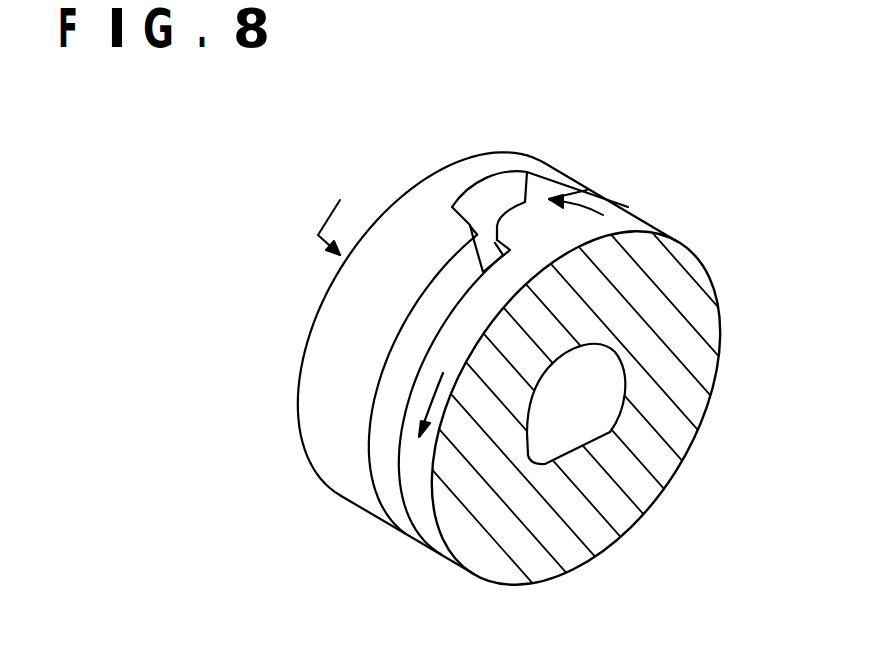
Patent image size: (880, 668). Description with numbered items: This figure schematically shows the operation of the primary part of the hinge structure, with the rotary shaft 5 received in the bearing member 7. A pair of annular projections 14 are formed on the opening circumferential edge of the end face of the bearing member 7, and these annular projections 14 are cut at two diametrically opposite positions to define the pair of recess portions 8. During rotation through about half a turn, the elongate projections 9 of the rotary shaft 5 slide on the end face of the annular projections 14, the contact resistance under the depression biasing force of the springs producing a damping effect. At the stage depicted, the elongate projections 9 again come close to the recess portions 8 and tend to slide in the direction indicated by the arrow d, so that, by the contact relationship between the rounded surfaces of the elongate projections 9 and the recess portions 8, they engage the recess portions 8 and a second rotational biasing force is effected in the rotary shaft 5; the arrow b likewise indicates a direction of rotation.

The rotary shaft 5 is at (677, 283).
The bearing member 7 is at (323, 412).
The recess portions 8 is at (497, 190).
The elongate projections 9 is at (533, 223).
The annular projections 14 is at (420, 327).
The rotation direction b is at (339, 202).
The arrow d is at (590, 195).